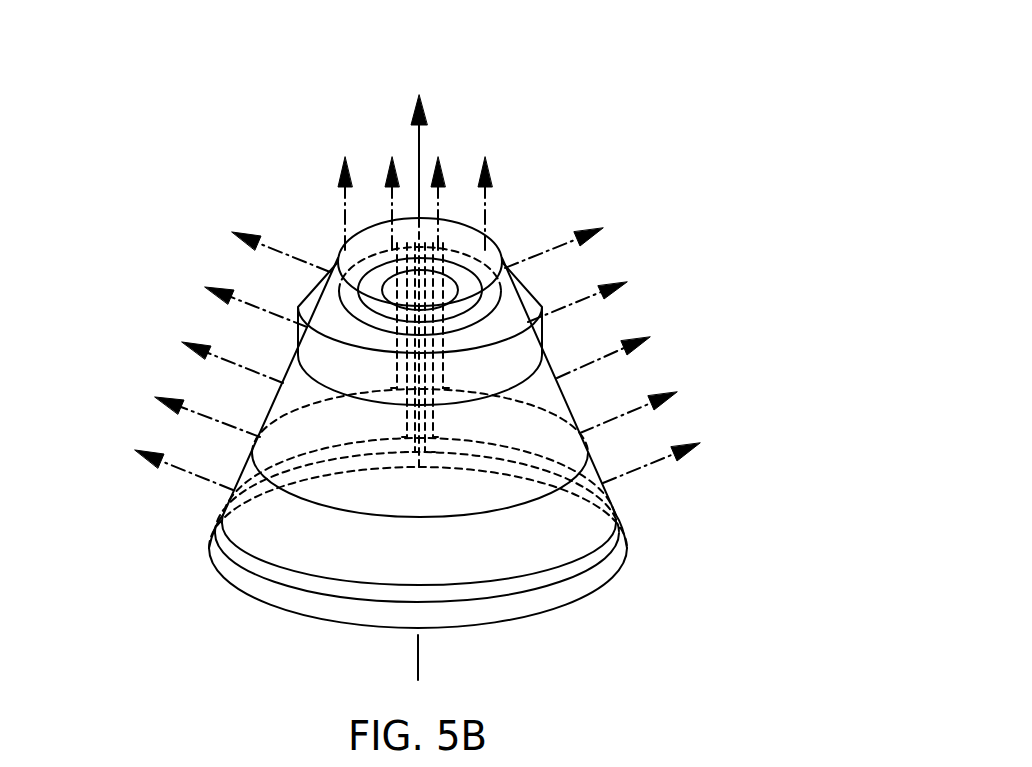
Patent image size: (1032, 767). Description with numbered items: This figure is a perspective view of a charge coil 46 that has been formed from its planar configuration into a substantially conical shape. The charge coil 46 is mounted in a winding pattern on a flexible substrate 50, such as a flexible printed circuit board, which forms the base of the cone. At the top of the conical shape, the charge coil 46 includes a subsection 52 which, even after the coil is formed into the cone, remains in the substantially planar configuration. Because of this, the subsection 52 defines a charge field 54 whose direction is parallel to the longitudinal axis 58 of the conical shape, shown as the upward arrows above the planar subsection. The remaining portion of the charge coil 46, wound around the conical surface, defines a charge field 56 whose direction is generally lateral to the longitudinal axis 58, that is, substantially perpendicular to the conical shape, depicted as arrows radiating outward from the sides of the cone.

The charge coil 46 is at (243, 563).
The flexible substrate 50 is at (295, 603).
The subsection 52 is at (497, 255).
The charge field 54 is at (485, 200).
The charge field 56 is at (607, 352).
The longitudinal axis 58 is at (417, 135).